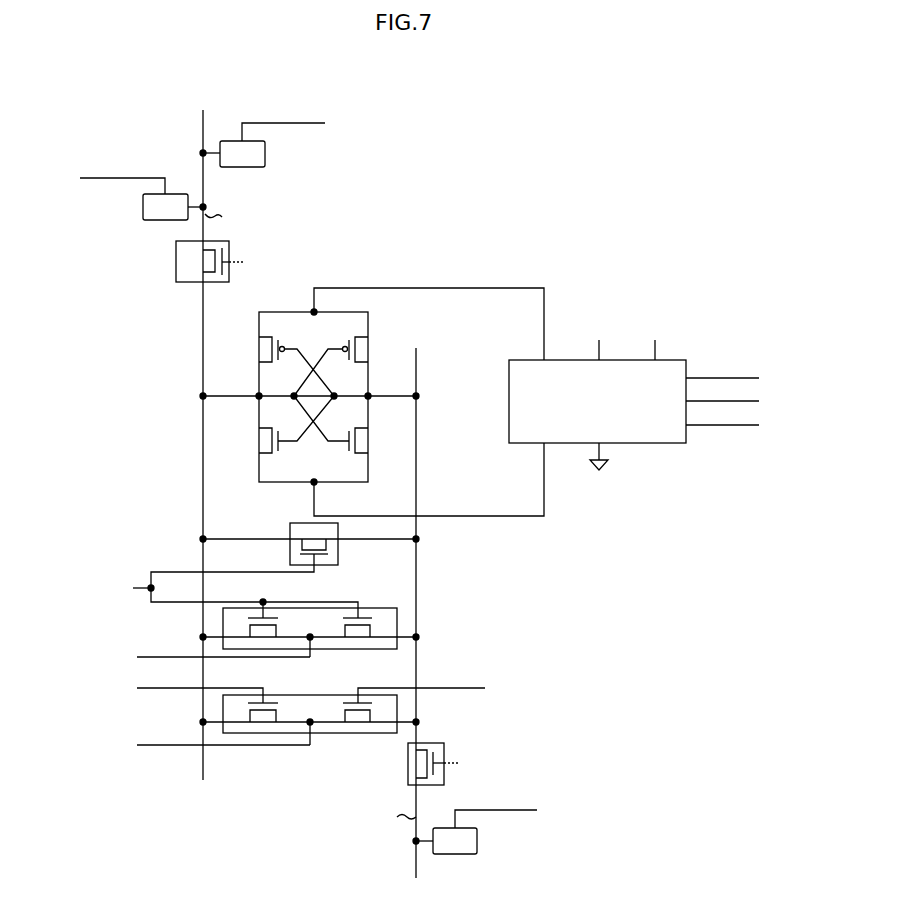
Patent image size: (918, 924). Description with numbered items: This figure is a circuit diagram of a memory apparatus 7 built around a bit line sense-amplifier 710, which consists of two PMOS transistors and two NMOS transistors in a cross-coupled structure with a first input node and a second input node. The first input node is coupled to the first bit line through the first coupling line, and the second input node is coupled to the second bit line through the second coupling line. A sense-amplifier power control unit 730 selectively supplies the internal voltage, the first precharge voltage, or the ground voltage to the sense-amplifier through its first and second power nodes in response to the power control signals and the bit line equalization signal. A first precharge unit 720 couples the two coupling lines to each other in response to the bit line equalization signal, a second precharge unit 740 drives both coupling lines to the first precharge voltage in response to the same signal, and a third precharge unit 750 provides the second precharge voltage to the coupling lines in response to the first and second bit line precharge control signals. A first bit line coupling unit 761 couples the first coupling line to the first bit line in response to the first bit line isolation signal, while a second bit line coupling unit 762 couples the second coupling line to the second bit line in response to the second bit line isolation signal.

The memory apparatus 7 is at (62, 133).
The bit line sense-amplifier 710 is at (356, 313).
The first precharge unit 720 is at (338, 553).
The sense-amplifier power control unit 730 is at (686, 363).
The second precharge unit 740 is at (368, 608).
The third precharge unit 750 is at (298, 695).
The first bit line coupling unit 761 is at (176, 262).
The second bit line coupling unit 762 is at (433, 743).